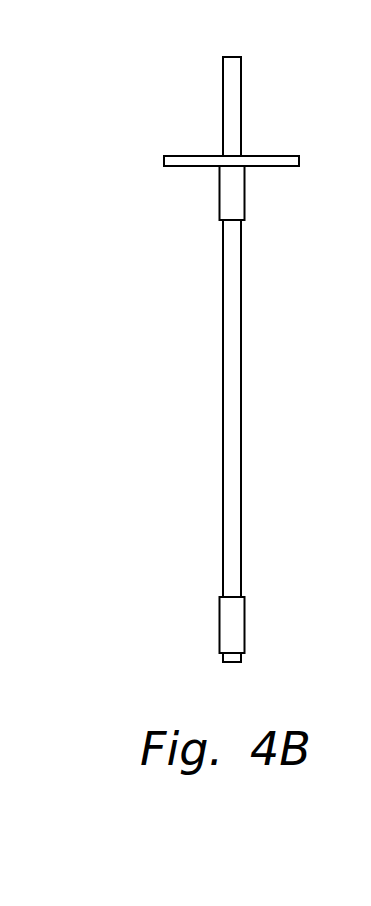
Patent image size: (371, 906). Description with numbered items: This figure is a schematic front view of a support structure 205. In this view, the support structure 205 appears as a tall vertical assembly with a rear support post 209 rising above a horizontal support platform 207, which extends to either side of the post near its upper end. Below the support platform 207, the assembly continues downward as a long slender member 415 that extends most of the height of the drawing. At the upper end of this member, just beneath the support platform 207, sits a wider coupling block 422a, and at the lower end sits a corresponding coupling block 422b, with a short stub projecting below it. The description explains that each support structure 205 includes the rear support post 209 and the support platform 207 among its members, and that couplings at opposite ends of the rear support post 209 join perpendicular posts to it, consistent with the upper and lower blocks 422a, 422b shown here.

The support structure 205 is at (140, 75).
The rear support post 209 is at (223, 111).
The support platform 207 is at (278, 150).
The upper coupling block 422a is at (242, 200).
The elongated rod 415 is at (240, 405).
The lower coupling block 422b is at (245, 622).